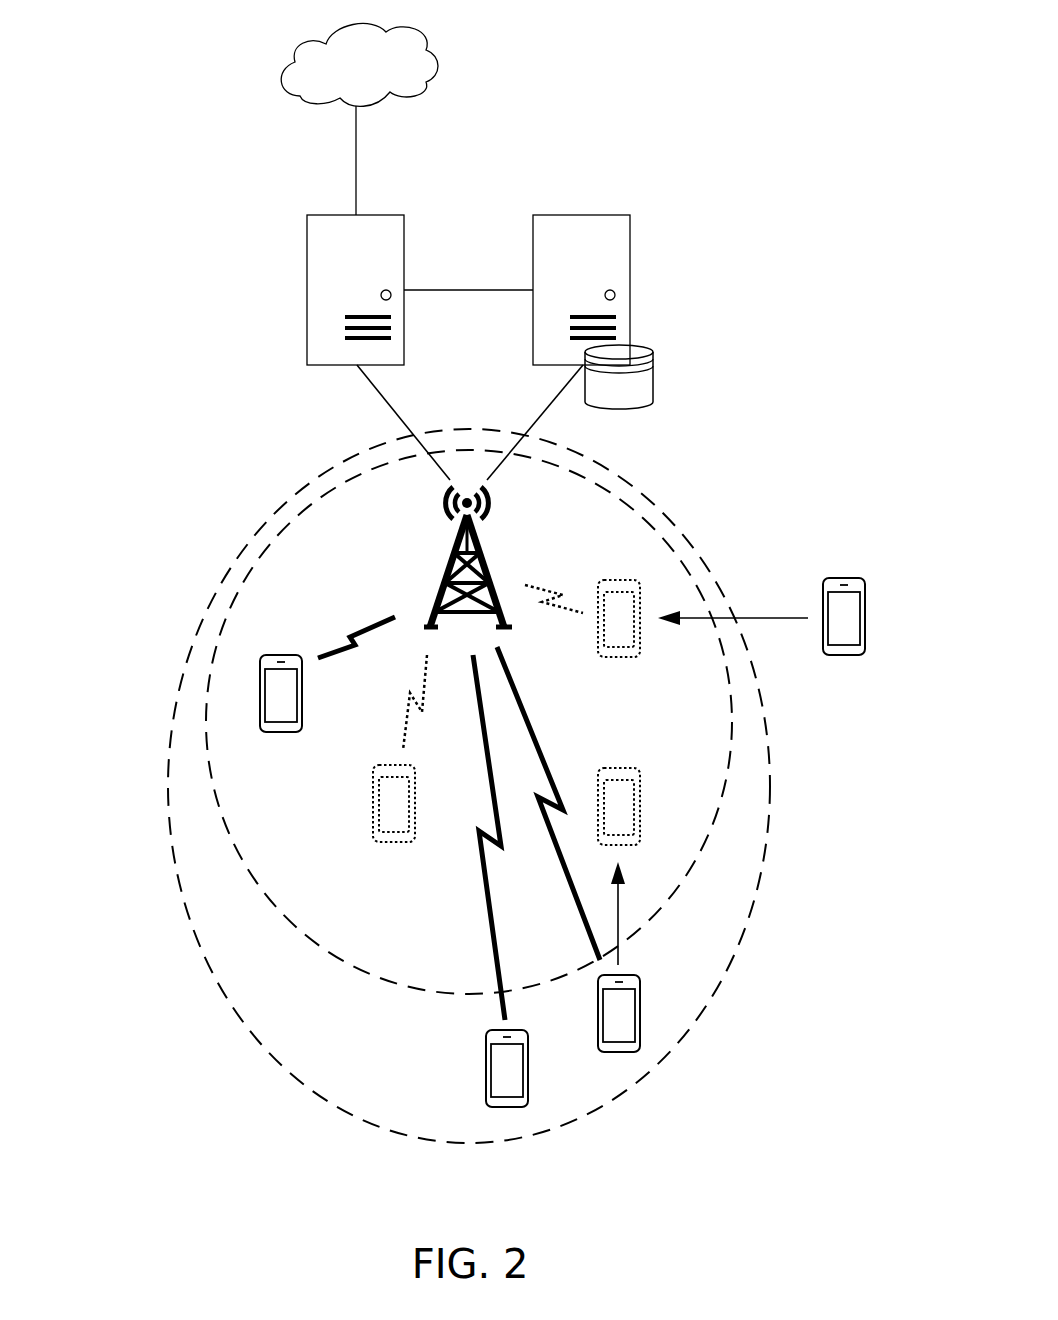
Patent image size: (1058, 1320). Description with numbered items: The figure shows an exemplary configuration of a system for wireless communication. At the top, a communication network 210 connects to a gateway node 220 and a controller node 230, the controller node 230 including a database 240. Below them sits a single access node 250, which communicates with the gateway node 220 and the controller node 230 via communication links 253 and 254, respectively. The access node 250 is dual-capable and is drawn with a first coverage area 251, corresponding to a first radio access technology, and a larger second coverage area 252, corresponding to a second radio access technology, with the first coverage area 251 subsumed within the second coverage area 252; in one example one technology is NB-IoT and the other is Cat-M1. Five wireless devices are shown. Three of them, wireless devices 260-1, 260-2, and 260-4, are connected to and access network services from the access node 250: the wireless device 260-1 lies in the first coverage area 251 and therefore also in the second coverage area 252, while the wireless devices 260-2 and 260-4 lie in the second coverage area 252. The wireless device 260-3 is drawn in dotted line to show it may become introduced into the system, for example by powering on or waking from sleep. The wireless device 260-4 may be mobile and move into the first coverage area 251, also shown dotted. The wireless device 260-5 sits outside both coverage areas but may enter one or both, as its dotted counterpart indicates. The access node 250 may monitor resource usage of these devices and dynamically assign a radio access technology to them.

The communication network 210 is at (433, 62).
The gateway node 220 is at (307, 236).
The controller node 230 is at (630, 236).
The database 240 is at (653, 366).
The access node 250 is at (453, 558).
The first coverage area 251 is at (208, 683).
The second coverage area 252 is at (170, 827).
The communication link 253 is at (366, 382).
The communication link 254 is at (544, 408).
The wireless device 260-1 is at (283, 732).
The wireless device 260-2 is at (486, 1065).
The wireless device 260-3 is at (397, 842).
The wireless device 260-4 is at (640, 1037).
The wireless device 260-5 is at (848, 657).